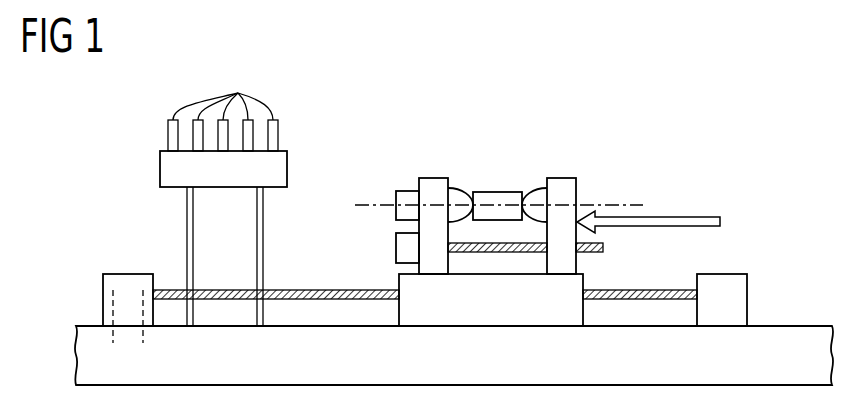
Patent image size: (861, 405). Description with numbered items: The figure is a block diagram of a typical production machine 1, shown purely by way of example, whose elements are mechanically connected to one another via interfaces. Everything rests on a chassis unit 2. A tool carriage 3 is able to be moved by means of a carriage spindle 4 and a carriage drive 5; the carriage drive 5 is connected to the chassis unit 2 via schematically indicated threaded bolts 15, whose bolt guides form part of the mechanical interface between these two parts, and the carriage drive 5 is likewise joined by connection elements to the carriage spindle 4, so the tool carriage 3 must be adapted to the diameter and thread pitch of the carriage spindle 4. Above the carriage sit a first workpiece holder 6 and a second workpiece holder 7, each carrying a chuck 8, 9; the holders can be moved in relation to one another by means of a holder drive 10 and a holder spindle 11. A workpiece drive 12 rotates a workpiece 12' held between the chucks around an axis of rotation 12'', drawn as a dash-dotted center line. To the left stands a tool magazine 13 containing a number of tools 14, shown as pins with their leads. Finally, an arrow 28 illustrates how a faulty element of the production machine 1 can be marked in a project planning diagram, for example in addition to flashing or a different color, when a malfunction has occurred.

The production machine 1 is at (703, 110).
The chassis unit 2 is at (796, 332).
The tool carriage 3 is at (490, 313).
The carriage spindle 4 is at (668, 292).
The carriage drive 5 is at (122, 280).
The first workpiece holder 6 is at (433, 183).
The second workpiece holder 7 is at (563, 183).
The chuck 8 is at (460, 190).
The chuck 9 is at (535, 190).
The holder drive 10 is at (405, 247).
The holder spindle 11 is at (603, 250).
The workpiece drive 12 is at (396, 178).
The workpiece 12' is at (497, 178).
The axis of rotation 12'' is at (507, 175).
The tool magazine 13 is at (168, 168).
The tools 14 is at (223, 107).
The threaded bolts 15 is at (143, 342).
The arrow 28 is at (675, 216).